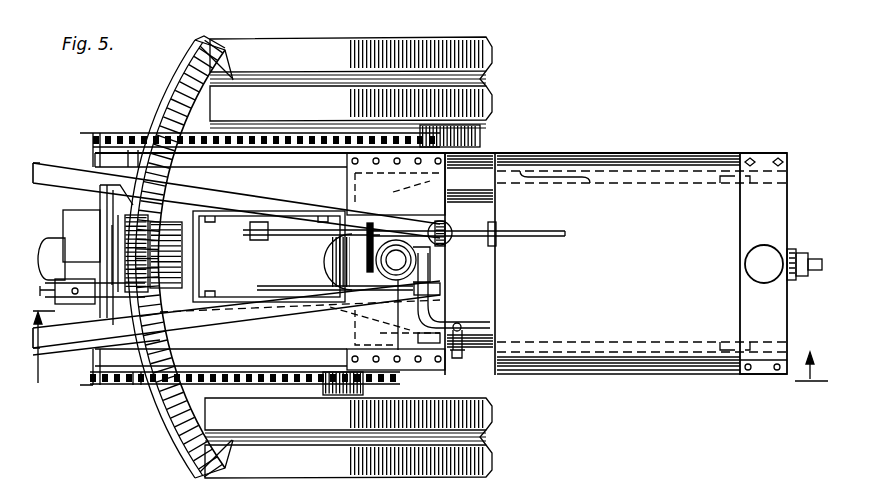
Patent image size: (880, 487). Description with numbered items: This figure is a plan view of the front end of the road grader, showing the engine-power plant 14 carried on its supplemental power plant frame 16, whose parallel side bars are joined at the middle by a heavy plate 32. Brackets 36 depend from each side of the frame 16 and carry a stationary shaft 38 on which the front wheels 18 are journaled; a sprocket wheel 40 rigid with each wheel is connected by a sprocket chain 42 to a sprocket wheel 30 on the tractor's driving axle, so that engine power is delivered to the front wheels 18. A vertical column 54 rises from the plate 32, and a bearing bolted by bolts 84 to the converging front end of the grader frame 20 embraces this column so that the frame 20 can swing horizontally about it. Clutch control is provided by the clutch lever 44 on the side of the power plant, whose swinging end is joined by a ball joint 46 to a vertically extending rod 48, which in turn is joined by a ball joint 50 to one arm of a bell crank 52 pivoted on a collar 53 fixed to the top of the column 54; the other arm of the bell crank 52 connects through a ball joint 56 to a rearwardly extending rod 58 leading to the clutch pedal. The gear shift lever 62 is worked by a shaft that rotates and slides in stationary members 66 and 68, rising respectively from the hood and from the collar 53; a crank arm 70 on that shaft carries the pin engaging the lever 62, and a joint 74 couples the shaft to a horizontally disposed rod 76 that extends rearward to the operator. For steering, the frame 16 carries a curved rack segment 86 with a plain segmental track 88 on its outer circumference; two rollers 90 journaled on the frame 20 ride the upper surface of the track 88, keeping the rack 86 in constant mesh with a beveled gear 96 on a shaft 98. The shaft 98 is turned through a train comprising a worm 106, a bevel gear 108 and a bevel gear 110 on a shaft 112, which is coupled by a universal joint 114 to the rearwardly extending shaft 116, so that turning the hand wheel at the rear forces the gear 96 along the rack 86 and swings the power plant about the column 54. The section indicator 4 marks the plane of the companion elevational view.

The section line 4 is at (430, 359).
The power plant 14 is at (480, 312).
The power plant frame 16 is at (228, 157).
The front wheels 18 is at (497, 51).
The grader frame 20 is at (42, 165).
The sprocket wheel 30 is at (85, 132).
The heavy plate 32 is at (450, 170).
The bracket 36 is at (295, 344).
The stationary shaft 38 is at (338, 321).
The sprocket wheel 40 is at (420, 133).
The sprocket chain 42 is at (238, 140).
The clutch lever 44 is at (452, 340).
The ball joint 46 is at (460, 352).
The vertically extending rod 48 is at (490, 336).
The ball joint 50 is at (462, 326).
The bell crank 52 is at (430, 311).
The collar 53 is at (440, 253).
The column 54 is at (395, 248).
The ball joint 56 is at (430, 290).
The horizontally rearwardly extending rod 58 is at (298, 284).
The gear shift lever 62 is at (437, 228).
The stationary member 66 is at (500, 235).
The stationary member 68 is at (370, 223).
The crank arm 70 is at (450, 232).
The joint 74 is at (330, 222).
The horizontally disposed rod 76 is at (262, 228).
The bolts 84 is at (322, 287).
The rack segment 86 is at (220, 58).
The segmental track 88 is at (175, 86).
The rollers 90 is at (130, 150).
The beveled gear 96 is at (82, 153).
The shaft 98 is at (95, 267).
The worm 106 is at (178, 237).
The bevel gear 108 is at (198, 285).
The bevel gear 110 is at (170, 318).
The shaft 112 is at (96, 339).
The universal joint 114 is at (80, 282).
The rearwardly extending shaft 116 is at (81, 255).